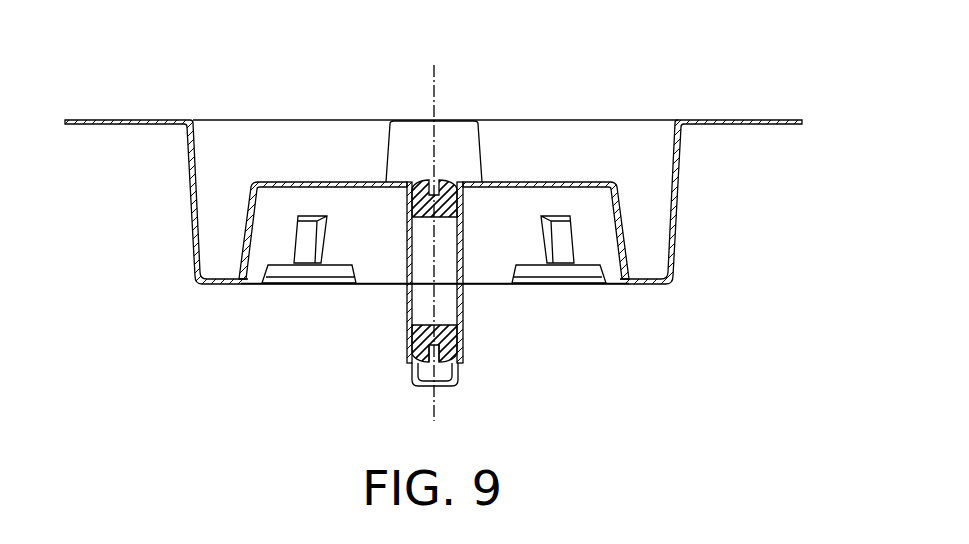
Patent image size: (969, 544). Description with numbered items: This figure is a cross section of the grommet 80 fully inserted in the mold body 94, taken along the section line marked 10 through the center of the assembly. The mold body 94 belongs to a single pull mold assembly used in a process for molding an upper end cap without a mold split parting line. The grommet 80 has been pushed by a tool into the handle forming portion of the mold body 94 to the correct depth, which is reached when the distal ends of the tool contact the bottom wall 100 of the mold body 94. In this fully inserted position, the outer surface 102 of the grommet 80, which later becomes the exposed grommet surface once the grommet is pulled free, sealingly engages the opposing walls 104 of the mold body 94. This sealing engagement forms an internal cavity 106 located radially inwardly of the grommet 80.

The section line indicator 10 is at (433, 65).
The grommet 80 is at (447, 340).
The mold body 94 is at (273, 356).
The bottom wall 100 is at (455, 386).
The outer surface 102 is at (460, 204).
The opposing walls 104 is at (412, 287).
The internal cavity 106 is at (403, 245).